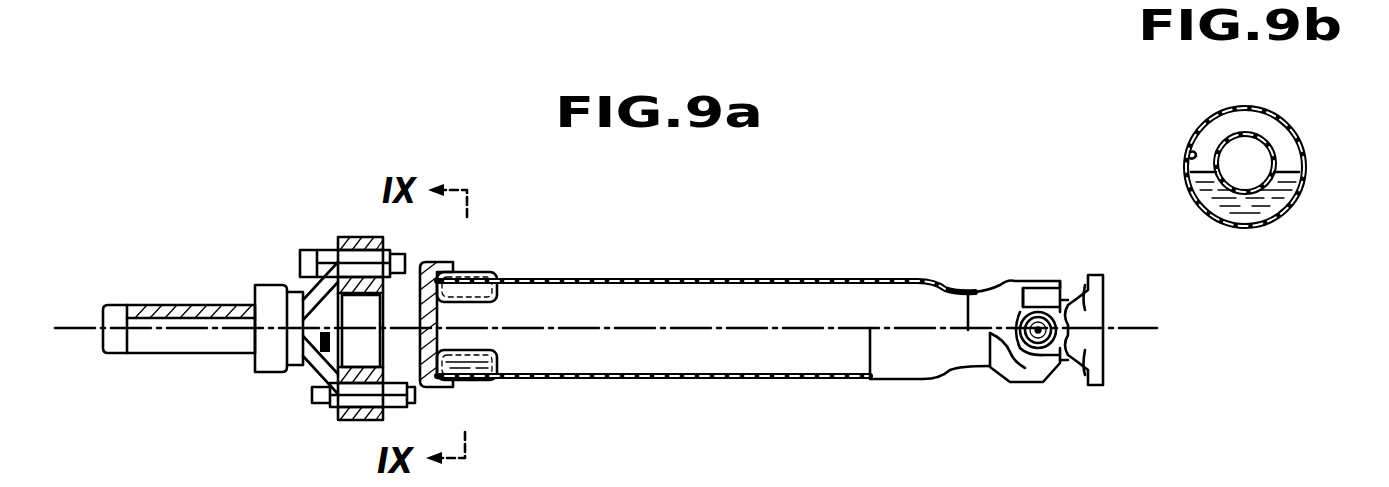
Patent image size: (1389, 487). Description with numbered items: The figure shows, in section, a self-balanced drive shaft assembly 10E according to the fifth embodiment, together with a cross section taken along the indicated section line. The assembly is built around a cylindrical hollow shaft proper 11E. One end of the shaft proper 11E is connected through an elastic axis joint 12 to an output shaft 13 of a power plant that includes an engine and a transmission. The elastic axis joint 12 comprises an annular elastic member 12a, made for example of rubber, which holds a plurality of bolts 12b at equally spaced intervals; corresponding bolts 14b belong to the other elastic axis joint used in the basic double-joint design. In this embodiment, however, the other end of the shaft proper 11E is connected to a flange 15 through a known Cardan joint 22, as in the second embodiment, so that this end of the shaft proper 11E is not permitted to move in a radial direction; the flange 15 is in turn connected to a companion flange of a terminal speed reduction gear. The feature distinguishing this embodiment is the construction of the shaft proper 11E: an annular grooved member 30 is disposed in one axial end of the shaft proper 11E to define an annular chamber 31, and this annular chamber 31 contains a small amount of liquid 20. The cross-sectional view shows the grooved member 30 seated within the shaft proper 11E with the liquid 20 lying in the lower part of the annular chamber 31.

In FIG. 9A, the drive shaft assembly 10E is at (846, 254).
In FIG. 9A, the cylindrical shaft proper 11E is at (755, 278).
In FIG. 9B, the cylindrical shaft proper 11E is at (1304, 146).
In FIG. 9A, the elastic axis joint 12 is at (361, 228).
In FIG. 9A, the annular elastic member 12a is at (337, 372).
In FIG. 9A, the bolts 12b is at (350, 243).
In FIG. 9A, the output shaft 13 is at (170, 304).
In FIG. 9B, the bolts 14b is at (1096, 13).
In FIG. 9A, the flange 15 is at (1098, 318).
In FIG. 9A, the liquid 20 is at (507, 383).
In FIG. 9B, the liquid 20 is at (1292, 197).
In FIG. 9A, the Cardan joint 22 is at (1010, 272).
In FIG. 9A, the annular grooved member 30 is at (520, 277).
In FIG. 9B, the annular grooved member 30 is at (1226, 137).
In FIG. 9A, the annular chamber 31 is at (462, 287).
In FIG. 9B, the annular chamber 31 is at (1192, 153).